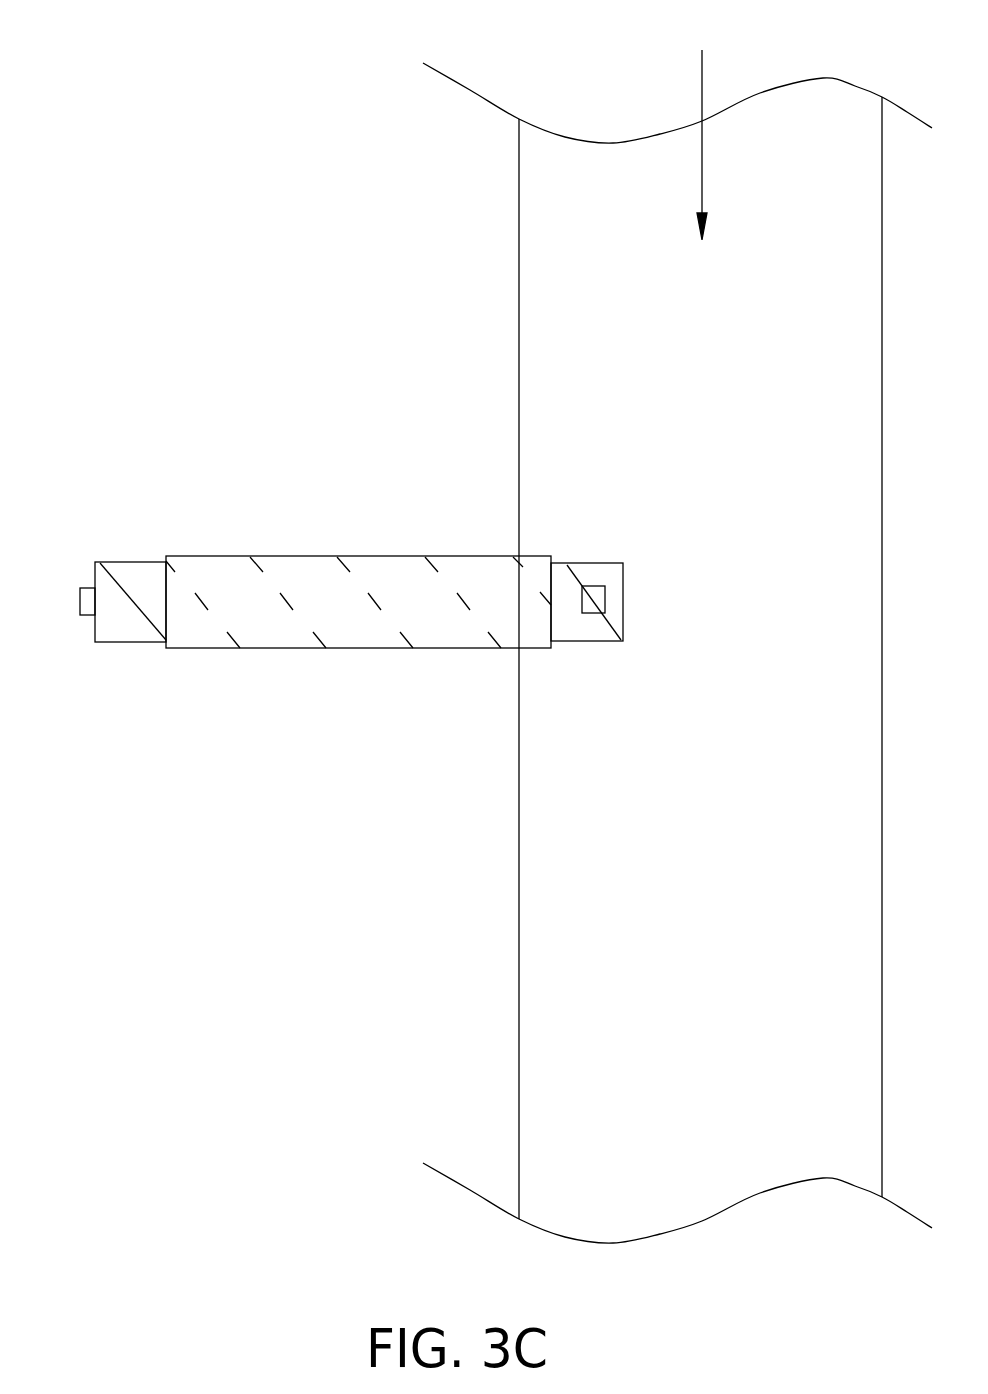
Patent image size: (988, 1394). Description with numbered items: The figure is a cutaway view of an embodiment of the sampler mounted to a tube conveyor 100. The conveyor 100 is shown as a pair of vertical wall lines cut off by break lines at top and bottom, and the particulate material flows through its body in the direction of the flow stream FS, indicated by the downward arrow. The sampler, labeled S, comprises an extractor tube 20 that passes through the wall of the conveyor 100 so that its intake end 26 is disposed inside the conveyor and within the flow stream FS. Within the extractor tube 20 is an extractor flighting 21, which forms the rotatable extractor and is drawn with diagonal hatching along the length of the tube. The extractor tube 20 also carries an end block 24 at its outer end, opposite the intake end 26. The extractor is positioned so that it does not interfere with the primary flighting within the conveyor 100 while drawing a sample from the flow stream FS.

The tubular conveyor 100 is at (519, 330).
The extractor tube 20 is at (363, 593).
The extractor flighting 21 is at (268, 556).
The first end block 24 is at (120, 562).
The intake end 26 is at (602, 563).
The sensor S is at (508, 538).
The flow stream FS is at (702, 125).